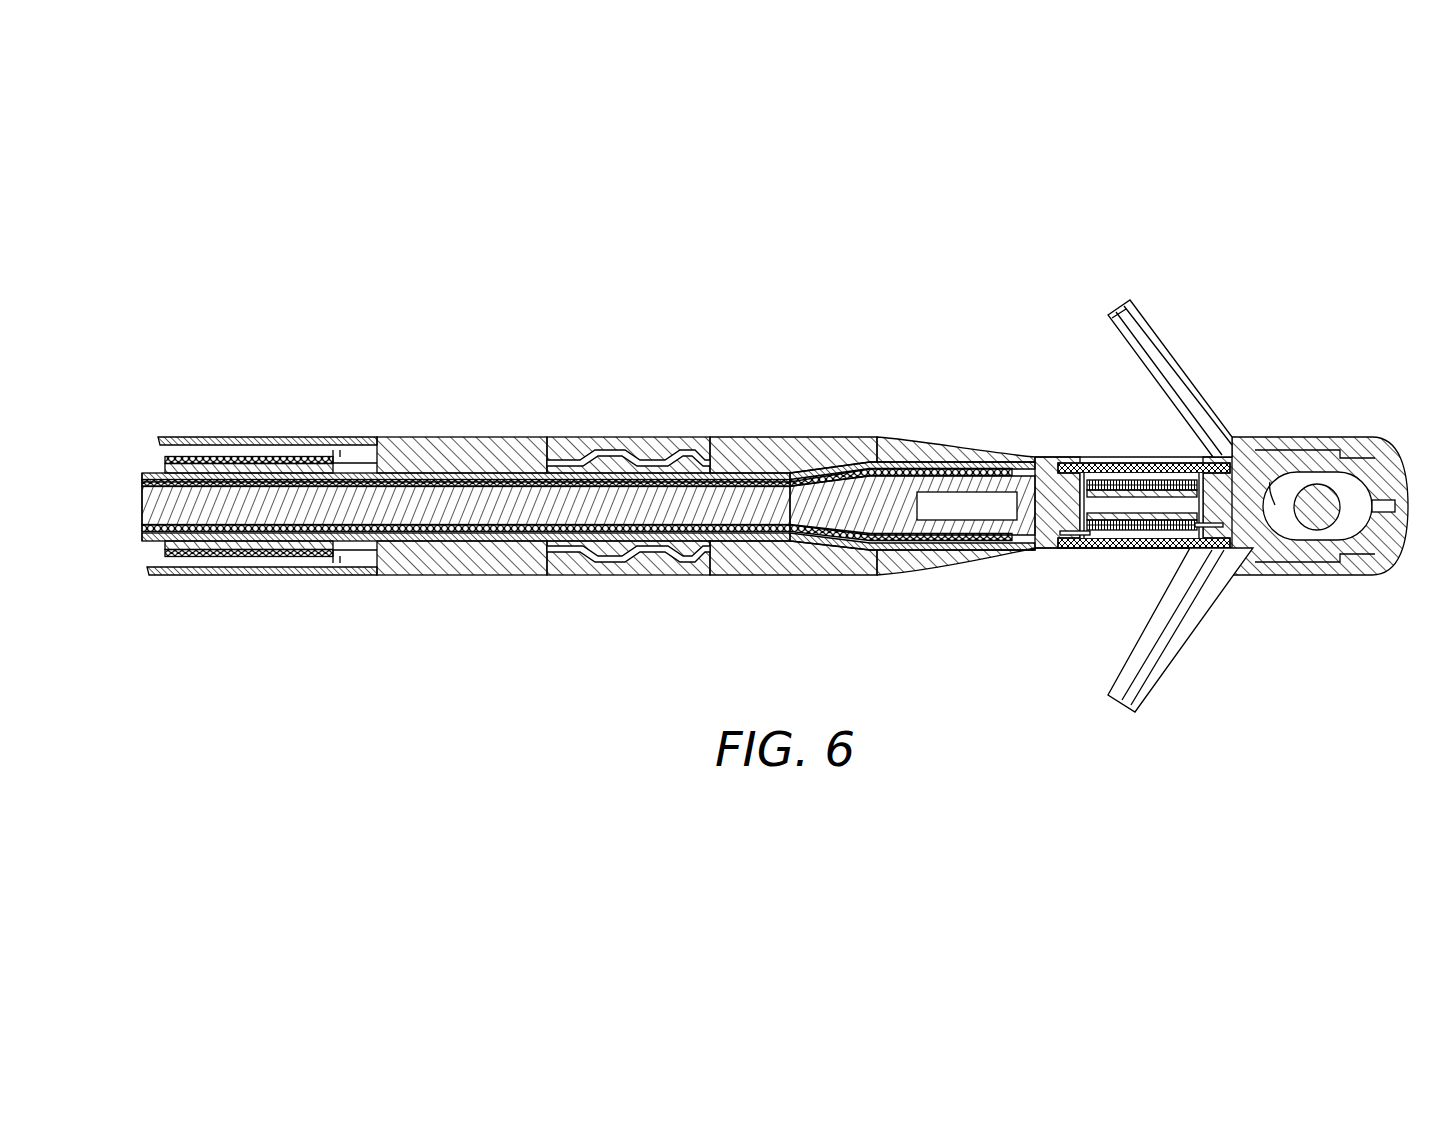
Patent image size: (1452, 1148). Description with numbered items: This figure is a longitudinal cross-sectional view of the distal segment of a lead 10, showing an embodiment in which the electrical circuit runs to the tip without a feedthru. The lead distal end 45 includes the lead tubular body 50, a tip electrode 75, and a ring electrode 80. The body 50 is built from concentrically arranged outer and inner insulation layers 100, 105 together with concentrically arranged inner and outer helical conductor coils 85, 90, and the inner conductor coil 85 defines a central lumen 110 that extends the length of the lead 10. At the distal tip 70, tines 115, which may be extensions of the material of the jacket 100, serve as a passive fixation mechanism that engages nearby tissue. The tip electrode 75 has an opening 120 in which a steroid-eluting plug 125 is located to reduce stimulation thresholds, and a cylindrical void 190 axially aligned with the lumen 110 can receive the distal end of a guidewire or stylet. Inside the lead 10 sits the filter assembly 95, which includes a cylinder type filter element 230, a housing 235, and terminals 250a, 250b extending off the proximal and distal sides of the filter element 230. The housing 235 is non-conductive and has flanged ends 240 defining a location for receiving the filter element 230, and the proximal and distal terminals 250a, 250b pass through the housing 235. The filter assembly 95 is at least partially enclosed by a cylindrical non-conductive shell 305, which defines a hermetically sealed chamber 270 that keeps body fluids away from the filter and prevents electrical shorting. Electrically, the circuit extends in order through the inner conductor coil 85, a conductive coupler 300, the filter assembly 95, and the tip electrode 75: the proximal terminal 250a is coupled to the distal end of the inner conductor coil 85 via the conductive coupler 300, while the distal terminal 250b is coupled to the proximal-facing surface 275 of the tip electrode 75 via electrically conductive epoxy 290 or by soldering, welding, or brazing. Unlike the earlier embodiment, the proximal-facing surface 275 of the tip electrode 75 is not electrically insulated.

The lead 10 is at (603, 315).
The lead distal end 45 is at (733, 313).
The lead tubular body 50 is at (650, 436).
The distal tip 70 is at (1407, 548).
The tip electrode 75 is at (1396, 560).
The ring electrode 80 is at (430, 436).
The inner conductor coil 85 is at (868, 542).
The outer conductor coil 90 is at (225, 452).
The filter assembly 95 is at (1080, 350).
The outer insulation layer 100 is at (173, 432).
The inner insulation layer 105 is at (155, 475).
The central lumen 110 is at (415, 520).
The tines 115 is at (1165, 352).
The opening 120 is at (1285, 480).
The steroid-eluting plug 125 is at (1320, 530).
The cylindrical void 190 is at (953, 505).
The filter element 230 is at (1105, 530).
The housing 235 is at (1125, 480).
The flanged ends 240 is at (1070, 463).
The proximal terminal 250a is at (1045, 545).
The distal terminal 250b is at (1243, 558).
The hermetically sealed chamber 270 is at (1175, 466).
The proximal-facing surface 275 is at (1270, 480).
The electrically conductive epoxy 290 is at (1228, 470).
The conductive coupler 300 is at (1040, 462).
The non-conductive shell 305 is at (1082, 478).